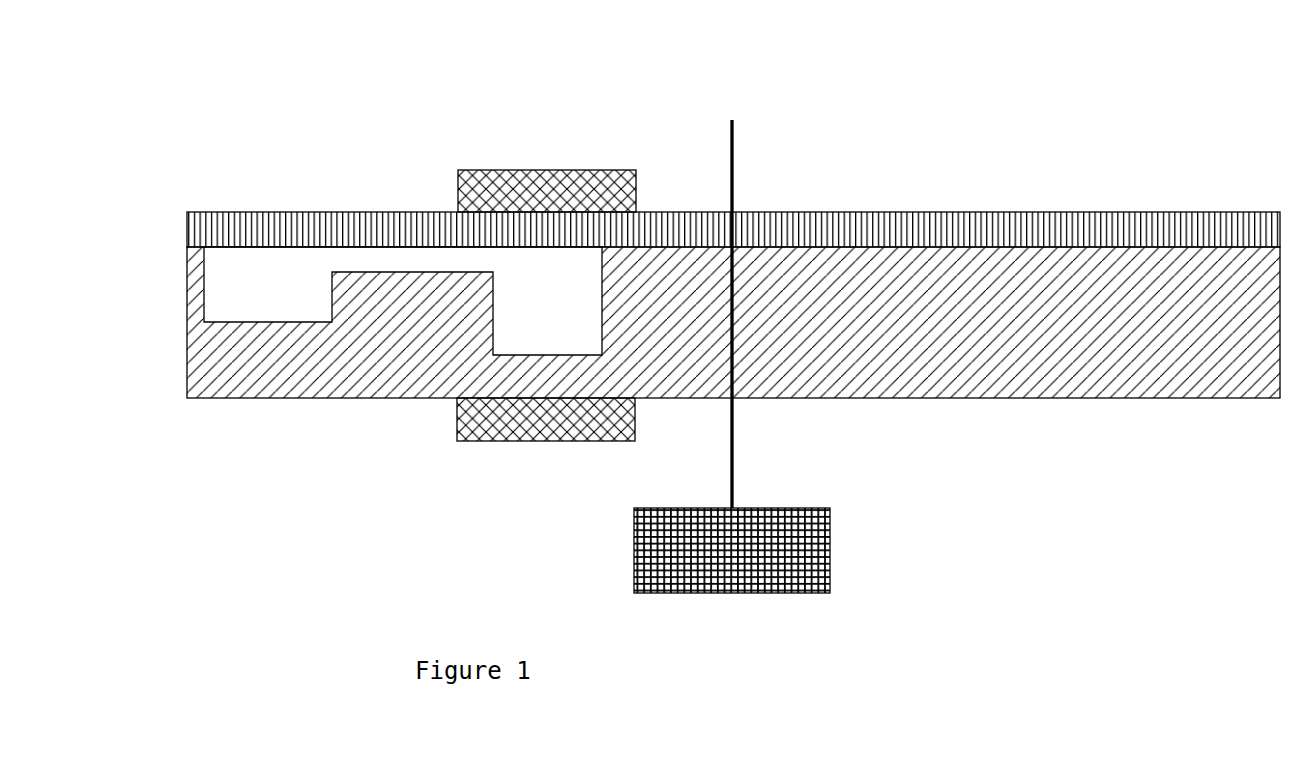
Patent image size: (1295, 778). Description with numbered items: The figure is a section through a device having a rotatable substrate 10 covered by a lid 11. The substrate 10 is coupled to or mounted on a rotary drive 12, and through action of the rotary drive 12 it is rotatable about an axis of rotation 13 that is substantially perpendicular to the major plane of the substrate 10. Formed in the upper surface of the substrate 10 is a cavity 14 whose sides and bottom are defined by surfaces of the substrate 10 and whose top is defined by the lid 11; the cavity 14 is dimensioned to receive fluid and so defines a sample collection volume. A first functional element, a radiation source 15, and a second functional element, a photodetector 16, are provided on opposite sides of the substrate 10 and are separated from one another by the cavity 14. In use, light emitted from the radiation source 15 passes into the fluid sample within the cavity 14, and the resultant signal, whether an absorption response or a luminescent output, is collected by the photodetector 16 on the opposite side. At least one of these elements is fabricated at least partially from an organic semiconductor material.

The rotatable substrate 10 is at (1093, 338).
The lid 11 is at (992, 247).
The rotary drive 12 is at (828, 548).
The axis of rotation 13 is at (735, 135).
The cavity 14 is at (280, 268).
The radiation source 15 is at (552, 177).
The photodetector 16 is at (482, 421).